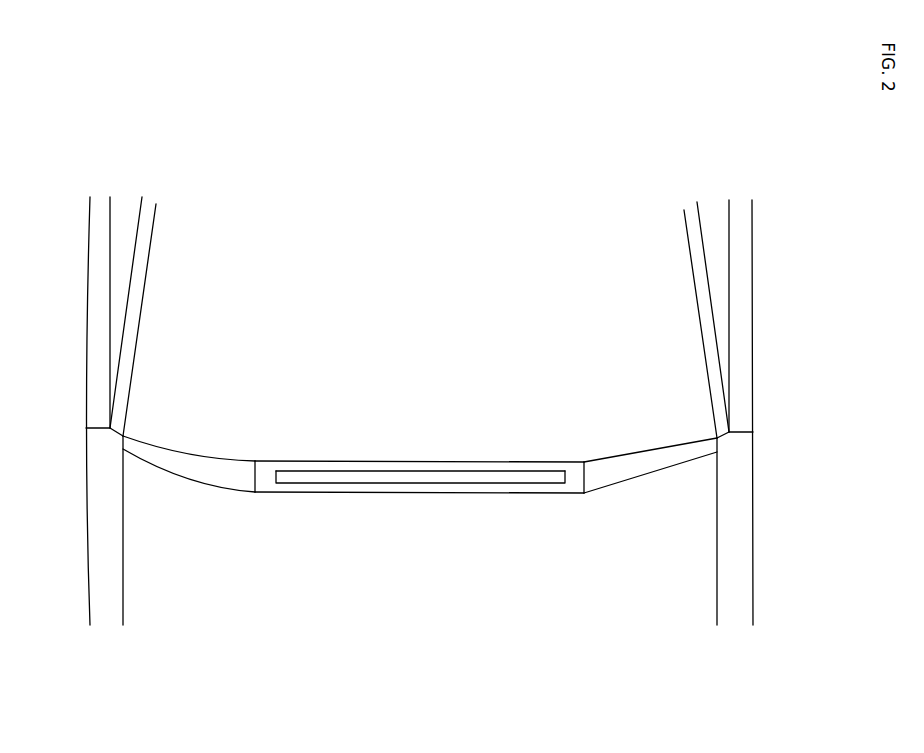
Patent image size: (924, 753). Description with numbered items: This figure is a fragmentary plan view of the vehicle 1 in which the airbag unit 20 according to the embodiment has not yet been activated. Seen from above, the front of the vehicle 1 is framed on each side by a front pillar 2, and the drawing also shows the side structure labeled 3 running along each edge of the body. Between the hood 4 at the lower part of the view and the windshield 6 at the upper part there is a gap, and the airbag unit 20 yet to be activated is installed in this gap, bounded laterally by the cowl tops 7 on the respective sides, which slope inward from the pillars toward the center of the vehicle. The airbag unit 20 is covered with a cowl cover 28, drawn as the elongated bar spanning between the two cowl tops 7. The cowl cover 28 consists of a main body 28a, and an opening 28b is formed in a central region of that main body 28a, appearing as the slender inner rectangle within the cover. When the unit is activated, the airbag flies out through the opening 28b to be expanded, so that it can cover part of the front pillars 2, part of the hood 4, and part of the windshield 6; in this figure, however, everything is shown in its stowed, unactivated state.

The vehicle 1 is at (463, 201).
The front pillars 2 is at (140, 286).
The side panel 3 is at (96, 522).
The hood 4 is at (586, 533).
The windshield 6 is at (363, 397).
The cowl tops 7 is at (195, 470).
The airbag unit 20 is at (317, 484).
The cowl cover 28 is at (438, 459).
The main body 28a is at (477, 467).
The opening 28b is at (514, 472).